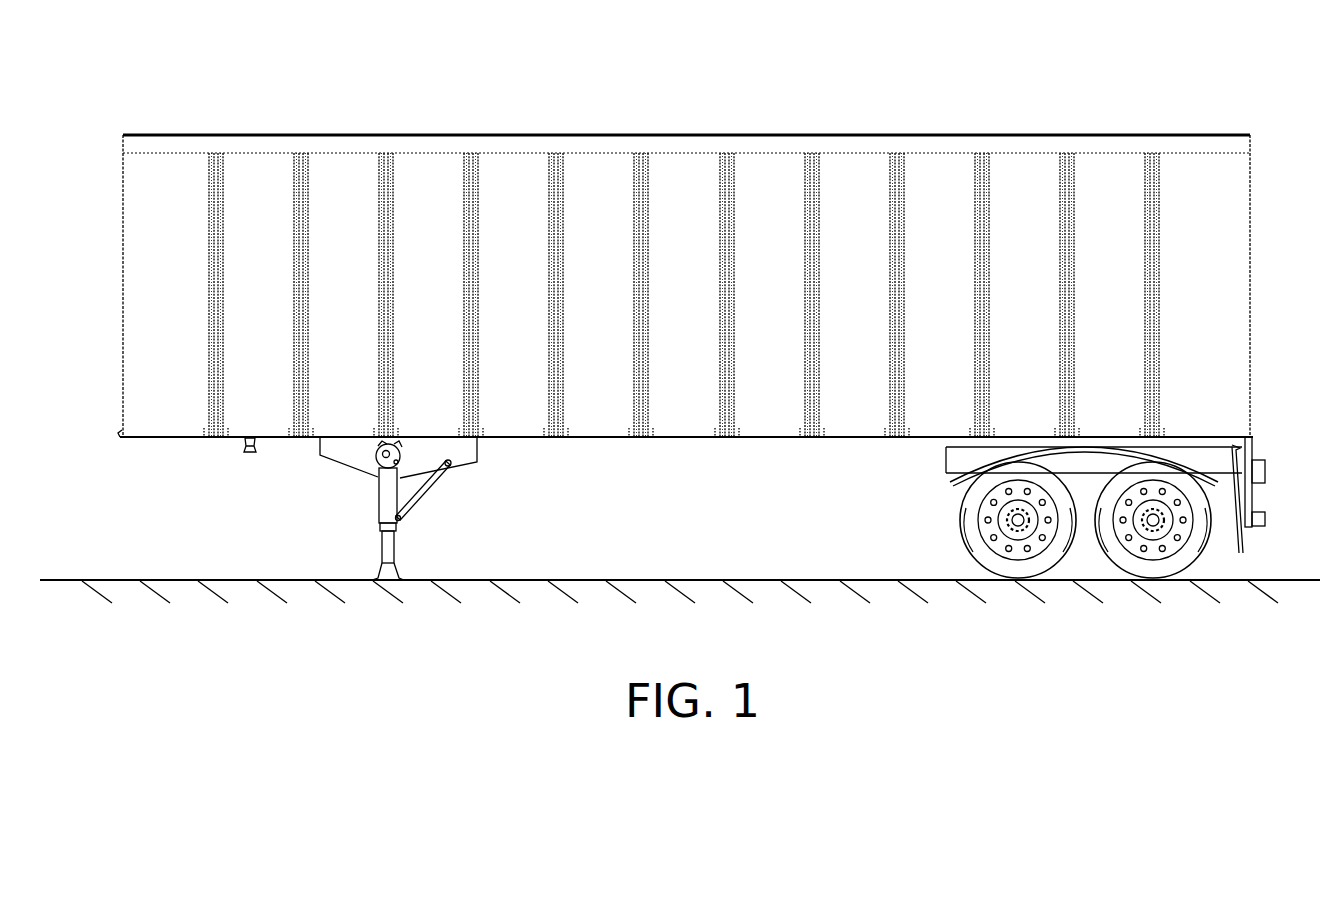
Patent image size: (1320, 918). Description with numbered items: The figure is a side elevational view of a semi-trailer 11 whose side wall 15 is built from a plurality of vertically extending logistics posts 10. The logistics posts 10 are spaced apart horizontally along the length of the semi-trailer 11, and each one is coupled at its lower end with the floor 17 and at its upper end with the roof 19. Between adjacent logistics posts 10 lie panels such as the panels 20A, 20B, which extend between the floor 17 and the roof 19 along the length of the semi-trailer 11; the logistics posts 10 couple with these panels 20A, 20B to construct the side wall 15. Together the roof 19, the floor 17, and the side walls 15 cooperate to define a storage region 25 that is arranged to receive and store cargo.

The logistics post 10 is at (717, 295).
The semi-trailer 11 is at (266, 128).
The side wall 15 is at (925, 201).
The floor 17 is at (690, 438).
The roof 19 is at (764, 135).
The panel 20A is at (505, 213).
The panel 20B is at (428, 210).
The storage region 25 is at (1262, 276).